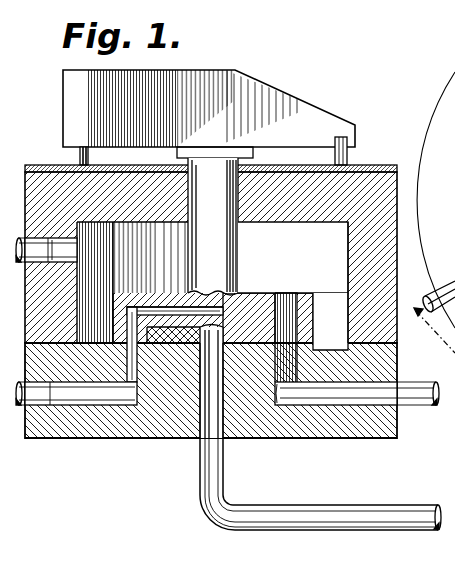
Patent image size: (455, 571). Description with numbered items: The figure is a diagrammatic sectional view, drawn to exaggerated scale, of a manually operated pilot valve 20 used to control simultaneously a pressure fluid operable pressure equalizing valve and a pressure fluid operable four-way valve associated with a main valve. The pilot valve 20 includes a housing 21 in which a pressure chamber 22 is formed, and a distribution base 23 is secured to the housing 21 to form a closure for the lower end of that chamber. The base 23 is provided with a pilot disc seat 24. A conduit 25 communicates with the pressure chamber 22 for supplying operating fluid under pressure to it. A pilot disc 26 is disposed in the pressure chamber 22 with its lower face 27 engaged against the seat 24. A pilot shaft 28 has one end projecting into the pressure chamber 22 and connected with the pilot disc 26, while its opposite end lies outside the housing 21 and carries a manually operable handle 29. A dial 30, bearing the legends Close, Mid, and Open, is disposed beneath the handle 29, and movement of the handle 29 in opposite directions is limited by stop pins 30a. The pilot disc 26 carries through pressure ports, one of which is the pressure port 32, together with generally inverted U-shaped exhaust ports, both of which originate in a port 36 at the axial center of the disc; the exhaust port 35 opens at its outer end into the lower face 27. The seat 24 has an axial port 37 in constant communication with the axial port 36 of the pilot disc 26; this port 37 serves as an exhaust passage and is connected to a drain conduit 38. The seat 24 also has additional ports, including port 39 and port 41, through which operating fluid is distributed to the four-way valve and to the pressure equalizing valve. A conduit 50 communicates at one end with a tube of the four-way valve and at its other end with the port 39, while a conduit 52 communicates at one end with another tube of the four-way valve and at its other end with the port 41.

The pilot valve 20 is at (397, 432).
The housing 21 is at (398, 180).
The pressure chamber 22 is at (350, 247).
The distribution base 23 is at (97, 437).
The pilot disc seat 24 is at (305, 343).
The conduit 25 is at (22, 240).
The pilot disc 26 is at (253, 293).
The lower face 27 is at (101, 344).
The pilot shaft 28 is at (194, 255).
The manually operable handle 29 is at (285, 93).
The dial 30 is at (381, 165).
The stop pins 30a is at (365, 111).
The pressure port 32 is at (290, 295).
The exhaust port 35 is at (133, 311).
The port 36 is at (216, 327).
The axial port 37 is at (195, 443).
The drain conduit 38 is at (342, 509).
The port 39 is at (312, 386).
The port 41 is at (147, 376).
The conduit 50 is at (420, 388).
The conduit 52 is at (50, 392).